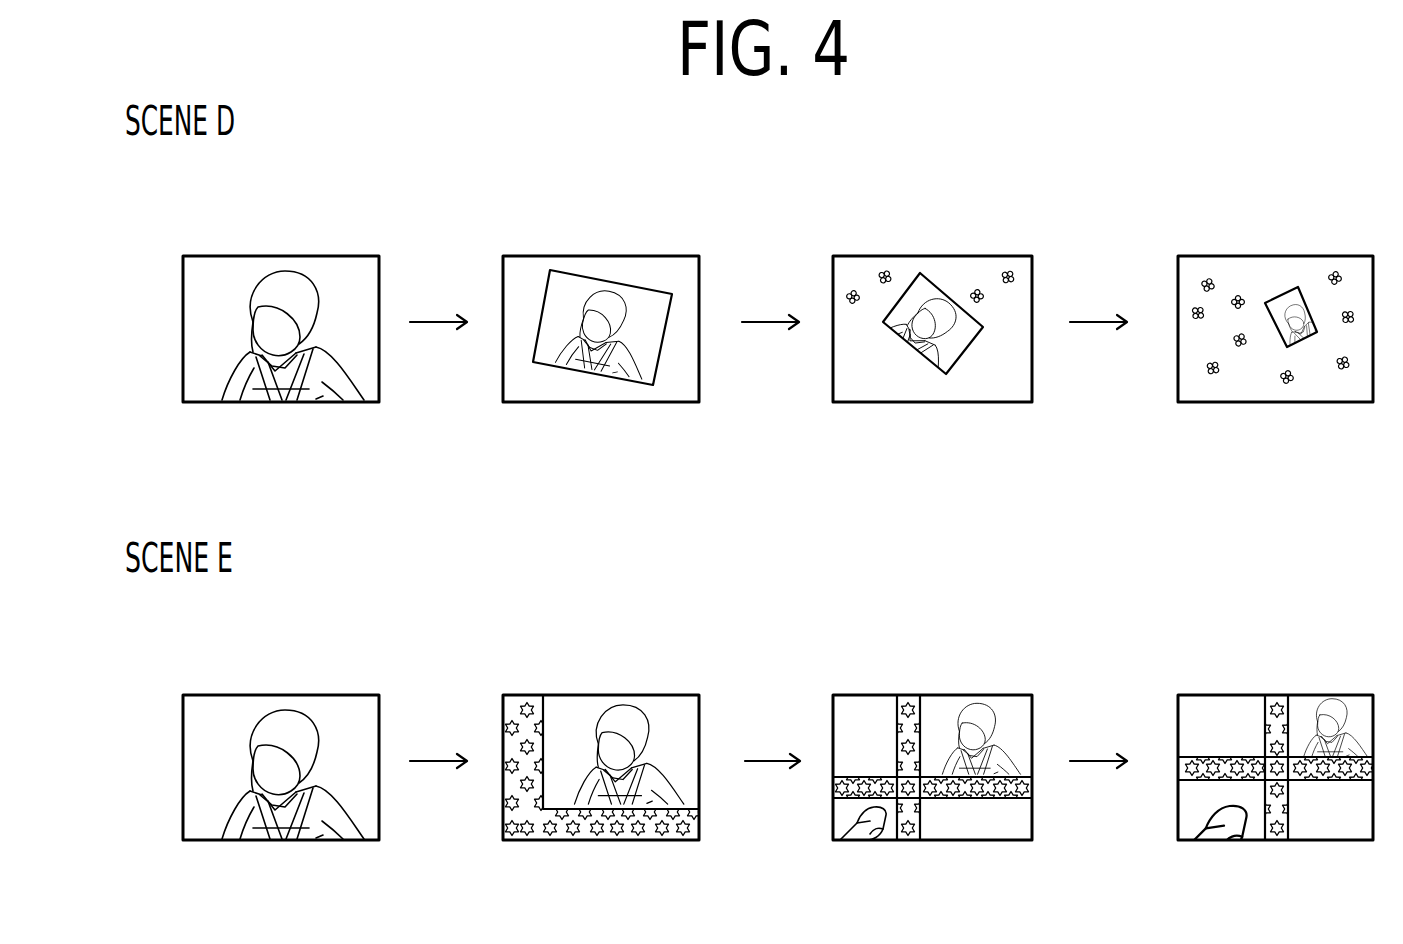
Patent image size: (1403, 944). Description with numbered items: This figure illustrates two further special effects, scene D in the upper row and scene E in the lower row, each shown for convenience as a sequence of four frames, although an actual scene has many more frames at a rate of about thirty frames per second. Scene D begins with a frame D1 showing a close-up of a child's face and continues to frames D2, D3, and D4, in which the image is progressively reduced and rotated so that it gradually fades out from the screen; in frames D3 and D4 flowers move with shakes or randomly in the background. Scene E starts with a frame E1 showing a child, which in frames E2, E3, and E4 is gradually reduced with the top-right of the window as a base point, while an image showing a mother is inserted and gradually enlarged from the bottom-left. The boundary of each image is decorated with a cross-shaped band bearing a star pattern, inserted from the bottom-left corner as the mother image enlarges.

The frame D1 is at (277, 256).
The frame D2 is at (603, 256).
The frame D3 is at (930, 255).
The frame D4 is at (1258, 254).
The frame E1 is at (277, 695).
The frame E2 is at (603, 695).
The frame E3 is at (930, 695).
The frame E4 is at (1258, 694).